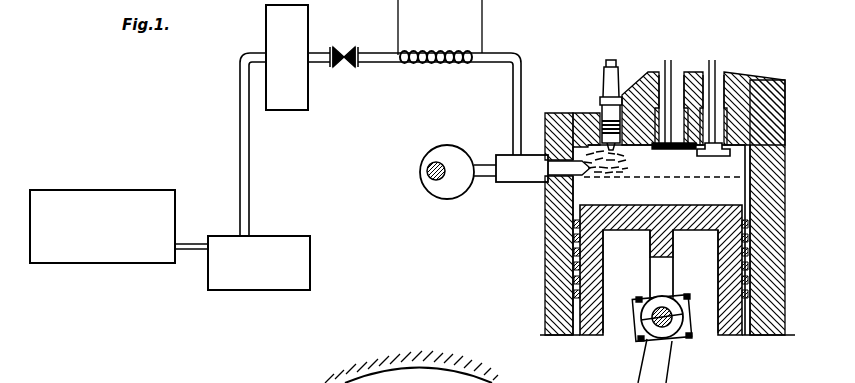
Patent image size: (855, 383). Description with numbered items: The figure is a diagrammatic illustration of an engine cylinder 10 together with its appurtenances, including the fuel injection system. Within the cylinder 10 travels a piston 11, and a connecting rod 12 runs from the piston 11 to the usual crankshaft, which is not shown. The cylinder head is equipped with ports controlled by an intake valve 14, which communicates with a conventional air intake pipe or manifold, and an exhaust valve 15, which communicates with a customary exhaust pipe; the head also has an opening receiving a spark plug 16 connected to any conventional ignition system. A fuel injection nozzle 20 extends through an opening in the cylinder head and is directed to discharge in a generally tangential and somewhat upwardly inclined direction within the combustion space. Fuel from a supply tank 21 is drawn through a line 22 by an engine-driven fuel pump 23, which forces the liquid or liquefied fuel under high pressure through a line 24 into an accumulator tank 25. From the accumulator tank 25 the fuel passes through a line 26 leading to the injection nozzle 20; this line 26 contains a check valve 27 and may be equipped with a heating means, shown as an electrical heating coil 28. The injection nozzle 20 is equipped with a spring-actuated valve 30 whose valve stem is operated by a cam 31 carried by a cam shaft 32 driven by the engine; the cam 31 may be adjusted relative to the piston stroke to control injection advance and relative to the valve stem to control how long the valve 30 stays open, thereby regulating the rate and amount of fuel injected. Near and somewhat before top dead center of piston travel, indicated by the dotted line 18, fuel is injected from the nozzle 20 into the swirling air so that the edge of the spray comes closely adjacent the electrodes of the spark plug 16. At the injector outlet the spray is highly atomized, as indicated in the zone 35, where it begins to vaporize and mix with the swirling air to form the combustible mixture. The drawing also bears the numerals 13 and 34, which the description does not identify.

The engine cylinder 10 is at (752, 187).
The piston 11 is at (641, 186).
The connecting rod 12 is at (658, 374).
The crankshaft flywheel 13 is at (383, 367).
The intake valve 14 is at (706, 160).
The exhaust valve 15 is at (672, 151).
The spark plug 16 is at (636, 146).
The dotted line 18 is at (752, 165).
The fuel injection nozzle 20 is at (584, 162).
The tank 21 is at (113, 191).
The line 22 is at (199, 242).
The fuel pump 23 is at (311, 258).
The line 24 is at (240, 127).
The accumulator tank 25 is at (280, 12).
The line 26 is at (508, 50).
The check valve 27 is at (354, 41).
The electrical heating coil 28 is at (398, 16).
The spring-actuated valve 30 is at (487, 177).
The cam 31 is at (452, 153).
The cam shaft 32 is at (427, 170).
The exhaust valve 34 is at (724, 122).
The zone of atomized spray 35 is at (598, 153).